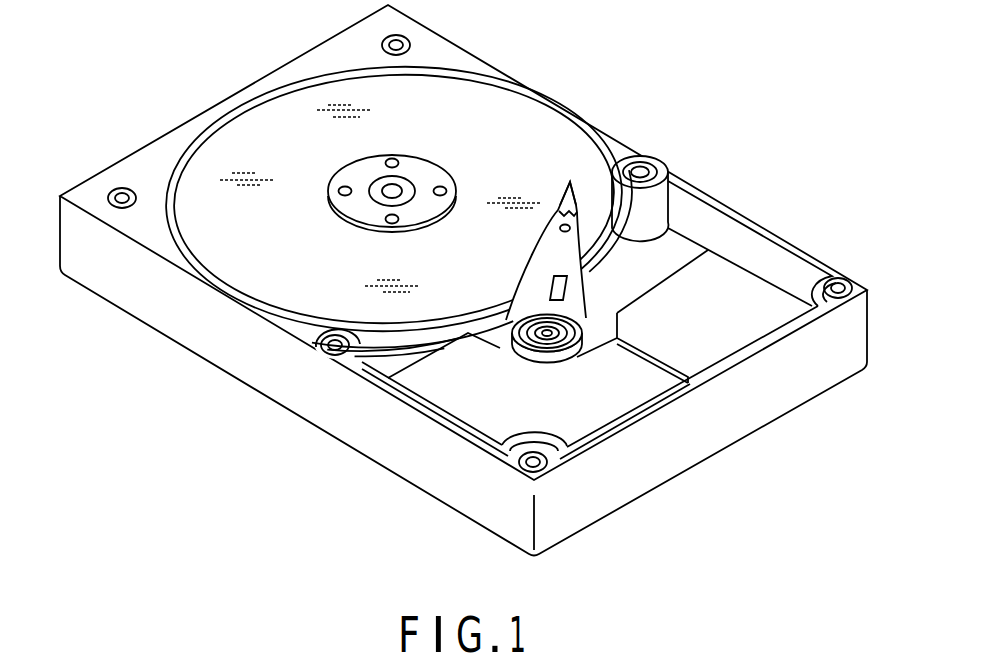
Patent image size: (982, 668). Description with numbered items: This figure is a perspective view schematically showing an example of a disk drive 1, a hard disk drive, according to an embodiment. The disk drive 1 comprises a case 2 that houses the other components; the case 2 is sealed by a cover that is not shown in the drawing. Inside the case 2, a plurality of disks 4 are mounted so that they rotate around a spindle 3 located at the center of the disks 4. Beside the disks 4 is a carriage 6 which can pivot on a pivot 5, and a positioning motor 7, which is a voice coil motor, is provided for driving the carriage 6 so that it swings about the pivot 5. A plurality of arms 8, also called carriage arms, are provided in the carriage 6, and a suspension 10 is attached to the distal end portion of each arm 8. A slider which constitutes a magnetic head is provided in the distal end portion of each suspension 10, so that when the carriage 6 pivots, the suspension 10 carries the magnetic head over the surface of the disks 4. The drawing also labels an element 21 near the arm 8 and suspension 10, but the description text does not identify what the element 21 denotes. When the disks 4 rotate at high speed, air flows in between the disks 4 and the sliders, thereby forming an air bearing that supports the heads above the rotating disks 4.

The disk drive 1 is at (757, 92).
The case 2 is at (260, 377).
The spindle 3 is at (407, 180).
The disks 4 is at (507, 120).
The pivot 5 is at (560, 338).
The carriage 6 is at (608, 270).
The positioning motor (voice coil motor) 7 is at (470, 413).
The arms (carriage arms) 8 is at (565, 305).
The suspension 10 is at (567, 188).
The arm 21 is at (557, 210).